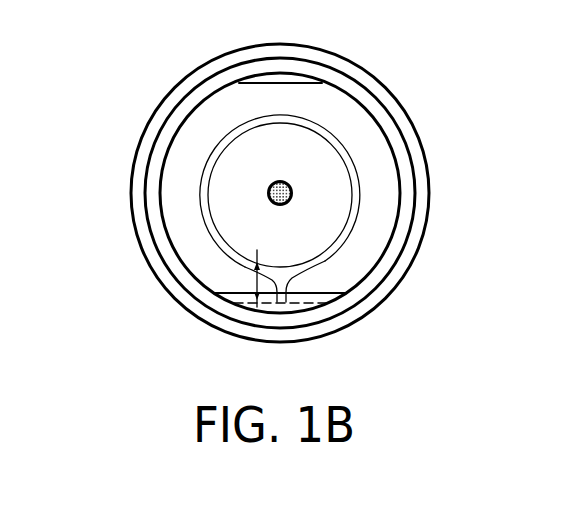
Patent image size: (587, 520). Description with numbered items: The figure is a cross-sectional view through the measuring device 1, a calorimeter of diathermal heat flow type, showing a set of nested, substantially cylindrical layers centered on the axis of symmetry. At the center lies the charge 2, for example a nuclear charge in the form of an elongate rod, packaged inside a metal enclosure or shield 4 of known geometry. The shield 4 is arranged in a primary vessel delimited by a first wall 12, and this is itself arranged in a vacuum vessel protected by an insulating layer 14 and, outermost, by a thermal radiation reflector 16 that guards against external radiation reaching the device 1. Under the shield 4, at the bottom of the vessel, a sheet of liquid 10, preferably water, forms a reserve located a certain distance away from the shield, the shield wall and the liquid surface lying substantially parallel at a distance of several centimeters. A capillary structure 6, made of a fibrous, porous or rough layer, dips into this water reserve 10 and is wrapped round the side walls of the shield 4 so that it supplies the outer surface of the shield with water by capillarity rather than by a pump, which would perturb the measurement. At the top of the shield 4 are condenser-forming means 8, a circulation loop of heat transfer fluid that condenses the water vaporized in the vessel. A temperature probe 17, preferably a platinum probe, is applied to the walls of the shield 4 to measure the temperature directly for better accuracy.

The measuring device 1 is at (163, 74).
The charge 2 is at (288, 202).
The shield 4 is at (353, 174).
The capillary structure 6 is at (367, 210).
The condenser-forming means 8 is at (272, 83).
The sheet of liquid 10 is at (307, 300).
The first wall 12 is at (160, 203).
The insulating layer 14 is at (153, 250).
The thermal radiation reflector 16 is at (168, 302).
The temperature probe 17 is at (357, 109).